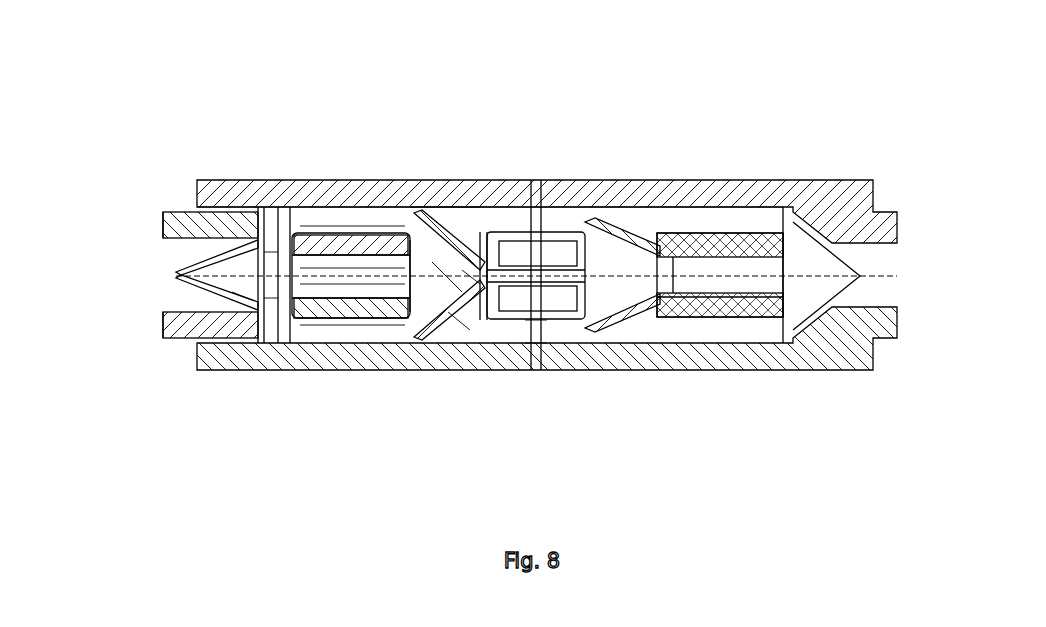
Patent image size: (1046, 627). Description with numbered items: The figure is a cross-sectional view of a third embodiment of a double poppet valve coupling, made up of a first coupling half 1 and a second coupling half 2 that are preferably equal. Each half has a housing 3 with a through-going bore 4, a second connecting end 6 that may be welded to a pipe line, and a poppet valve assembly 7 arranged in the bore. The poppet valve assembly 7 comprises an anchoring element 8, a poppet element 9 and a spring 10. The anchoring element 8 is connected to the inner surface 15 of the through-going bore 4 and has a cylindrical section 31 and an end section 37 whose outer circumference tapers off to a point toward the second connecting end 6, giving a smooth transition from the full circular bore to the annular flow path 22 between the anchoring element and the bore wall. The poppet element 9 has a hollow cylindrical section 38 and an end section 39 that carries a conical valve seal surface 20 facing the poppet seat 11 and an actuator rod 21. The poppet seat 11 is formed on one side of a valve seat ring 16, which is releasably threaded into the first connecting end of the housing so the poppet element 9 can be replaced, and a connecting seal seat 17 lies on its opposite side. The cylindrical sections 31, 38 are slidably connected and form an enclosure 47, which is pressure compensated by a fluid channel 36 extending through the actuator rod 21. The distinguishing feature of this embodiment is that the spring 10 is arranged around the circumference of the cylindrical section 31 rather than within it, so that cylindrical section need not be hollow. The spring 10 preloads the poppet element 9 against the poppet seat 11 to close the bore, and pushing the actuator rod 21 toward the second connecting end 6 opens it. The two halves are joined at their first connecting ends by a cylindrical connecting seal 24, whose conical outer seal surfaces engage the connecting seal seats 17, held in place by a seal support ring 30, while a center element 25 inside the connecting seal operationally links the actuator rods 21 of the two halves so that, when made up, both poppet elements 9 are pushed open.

The first coupling half 1 is at (353, 174).
The second coupling half 2 is at (740, 177).
The housing 3 is at (267, 213).
The through-going bore 4 is at (176, 270).
The second connecting end 6 is at (166, 280).
The poppet valve assembly 7 is at (332, 228).
The anchoring element 8 is at (270, 303).
The poppet element 9 is at (422, 303).
The spring 10 is at (367, 302).
The poppet seat 11 is at (458, 320).
The inner surface 15 is at (260, 188).
The valve seat ring 16 is at (458, 210).
The connecting seal seat 17 is at (498, 222).
The conical valve seal surface 20 is at (448, 300).
The actuator rod 21 is at (470, 278).
The annular flow path 22 is at (325, 332).
The cylindrical connecting seal 24 is at (548, 232).
The center element 25 is at (548, 278).
The seal support ring 30 is at (535, 333).
The cylindrical section 31 is at (320, 277).
The fluid channel 36 is at (430, 247).
The end section 37 is at (238, 290).
The cylindrical section 38 is at (367, 232).
The end section 39 is at (438, 270).
The enclosure 47 is at (405, 277).